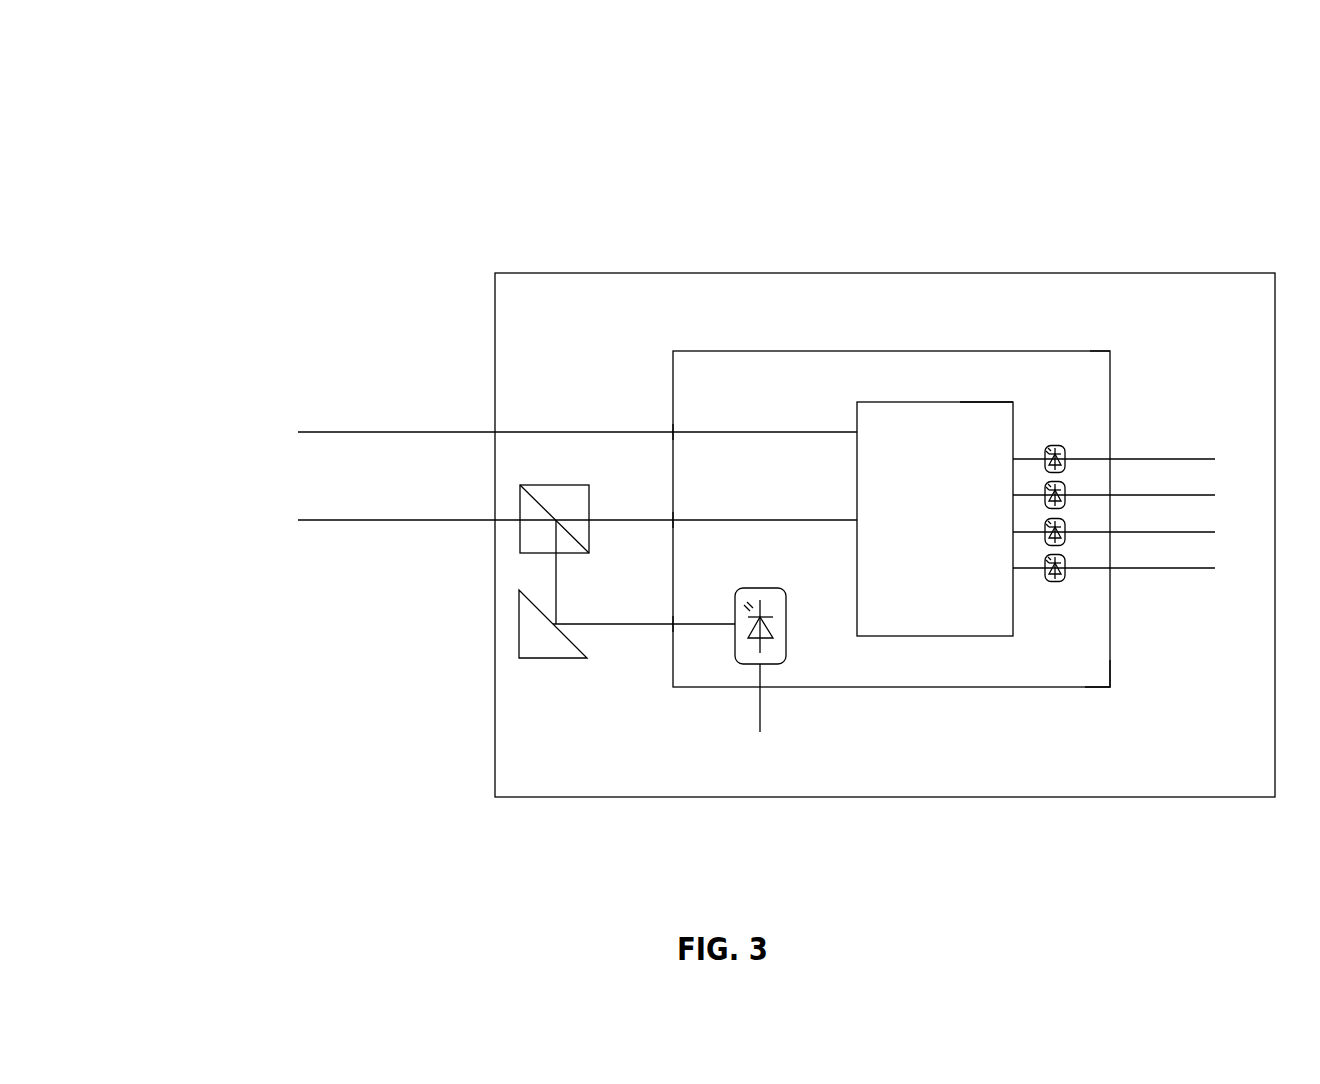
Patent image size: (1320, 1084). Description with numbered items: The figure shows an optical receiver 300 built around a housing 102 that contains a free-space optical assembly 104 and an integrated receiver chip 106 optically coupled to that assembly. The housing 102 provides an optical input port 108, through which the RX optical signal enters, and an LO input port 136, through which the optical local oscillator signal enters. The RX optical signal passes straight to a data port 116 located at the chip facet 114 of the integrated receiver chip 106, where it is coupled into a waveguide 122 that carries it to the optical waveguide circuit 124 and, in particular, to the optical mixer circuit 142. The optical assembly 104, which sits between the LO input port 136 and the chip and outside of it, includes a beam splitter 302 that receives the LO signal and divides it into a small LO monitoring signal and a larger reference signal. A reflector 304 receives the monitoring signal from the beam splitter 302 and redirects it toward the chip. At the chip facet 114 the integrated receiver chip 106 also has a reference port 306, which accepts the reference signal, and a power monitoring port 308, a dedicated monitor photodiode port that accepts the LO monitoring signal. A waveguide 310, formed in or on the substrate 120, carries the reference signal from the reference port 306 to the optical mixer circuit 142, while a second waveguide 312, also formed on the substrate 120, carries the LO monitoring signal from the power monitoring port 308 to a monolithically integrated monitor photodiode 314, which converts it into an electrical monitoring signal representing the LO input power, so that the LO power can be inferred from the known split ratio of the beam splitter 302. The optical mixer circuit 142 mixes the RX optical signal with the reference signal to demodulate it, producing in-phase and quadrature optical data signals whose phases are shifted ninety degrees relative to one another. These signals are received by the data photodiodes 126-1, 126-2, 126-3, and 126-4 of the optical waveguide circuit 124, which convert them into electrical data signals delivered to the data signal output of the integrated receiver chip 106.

The optical receiver 300 is at (240, 70).
The housing 102 is at (943, 272).
The optical assembly 104 is at (591, 611).
The integrated receiver chip 106 is at (1102, 350).
The optical input port 108 is at (489, 443).
The chip facet 114 is at (1079, 347).
The data port 116 is at (669, 428).
The substrate 120 is at (1085, 673).
The waveguide 122 is at (713, 434).
The optical waveguide circuit 124 is at (876, 393).
The data photodiode 126-1 is at (1062, 452).
The data photodiode 126-2 is at (1062, 488).
The data photodiode 126-3 is at (1062, 525).
The data photodiode 126-4 is at (1062, 561).
The LO input port 136 is at (489, 524).
The optical mixer circuit 142 is at (973, 402).
The beam splitter 302 is at (562, 485).
The reflector 304 is at (519, 643).
The reference port 306 is at (669, 515).
The power monitoring port 308 is at (670, 633).
The waveguide 310 is at (772, 520).
The waveguide 312 is at (688, 623).
The monitor photodiode 314 is at (787, 625).